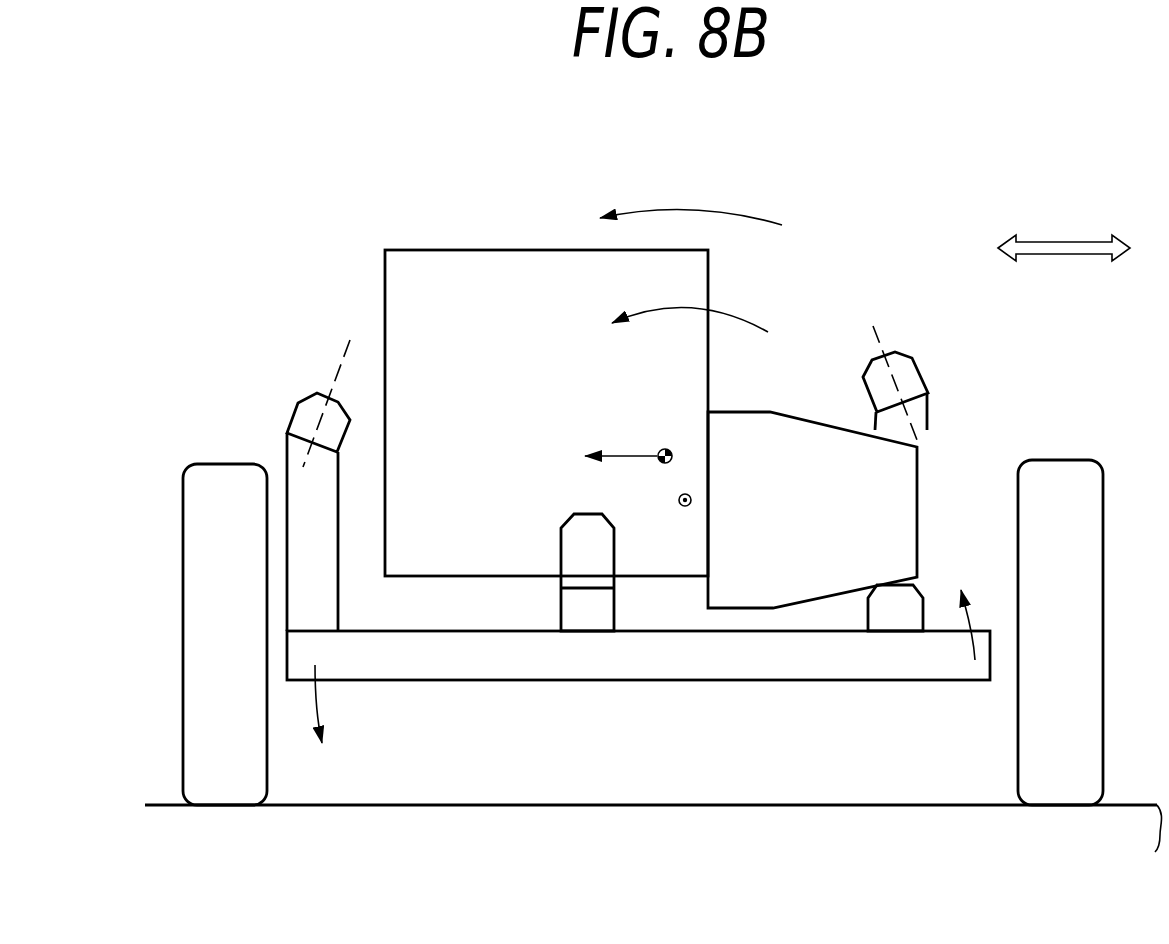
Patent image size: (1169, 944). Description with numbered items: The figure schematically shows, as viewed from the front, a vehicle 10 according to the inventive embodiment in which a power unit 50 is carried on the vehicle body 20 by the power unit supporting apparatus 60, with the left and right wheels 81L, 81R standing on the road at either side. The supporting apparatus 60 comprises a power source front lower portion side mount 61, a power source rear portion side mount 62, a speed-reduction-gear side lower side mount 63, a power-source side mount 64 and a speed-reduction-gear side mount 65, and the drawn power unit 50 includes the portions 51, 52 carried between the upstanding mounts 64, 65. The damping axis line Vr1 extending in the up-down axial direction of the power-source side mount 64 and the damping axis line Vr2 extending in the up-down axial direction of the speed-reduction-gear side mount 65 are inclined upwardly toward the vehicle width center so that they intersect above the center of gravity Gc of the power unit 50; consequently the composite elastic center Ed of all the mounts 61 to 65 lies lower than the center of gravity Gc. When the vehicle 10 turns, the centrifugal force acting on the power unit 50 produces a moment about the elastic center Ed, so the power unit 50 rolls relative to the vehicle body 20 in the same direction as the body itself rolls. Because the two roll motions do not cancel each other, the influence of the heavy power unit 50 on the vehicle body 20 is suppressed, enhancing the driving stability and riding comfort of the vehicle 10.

The vehicle 10 is at (262, 262).
The vehicle body 20 is at (375, 663).
The power unit 50 is at (838, 868).
The upper body 51 is at (672, 580).
The lower body 52 is at (763, 615).
The power unit supporting apparatus 60 is at (535, 599).
The power source front lower portion side mount 61 is at (590, 578).
The power source rear portion side mount 62 is at (587, 572).
The speed-reduction-gear side lower side mount 63 is at (898, 615).
The power-source side mount 64 is at (302, 405).
The speed-reduction-gear side mount 65 is at (912, 382).
The right wheel 81R is at (208, 783).
The left wheel 81L is at (1048, 783).
The damping axis line Vr1 is at (343, 357).
The damping axis line Vr2 is at (883, 335).
The center of gravity Gc is at (672, 452).
The composite elastic center Ed is at (692, 500).